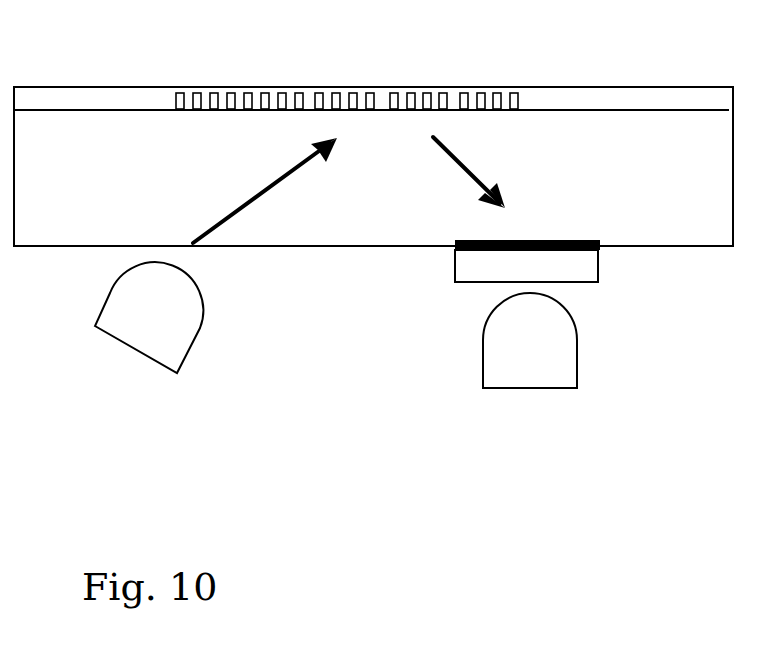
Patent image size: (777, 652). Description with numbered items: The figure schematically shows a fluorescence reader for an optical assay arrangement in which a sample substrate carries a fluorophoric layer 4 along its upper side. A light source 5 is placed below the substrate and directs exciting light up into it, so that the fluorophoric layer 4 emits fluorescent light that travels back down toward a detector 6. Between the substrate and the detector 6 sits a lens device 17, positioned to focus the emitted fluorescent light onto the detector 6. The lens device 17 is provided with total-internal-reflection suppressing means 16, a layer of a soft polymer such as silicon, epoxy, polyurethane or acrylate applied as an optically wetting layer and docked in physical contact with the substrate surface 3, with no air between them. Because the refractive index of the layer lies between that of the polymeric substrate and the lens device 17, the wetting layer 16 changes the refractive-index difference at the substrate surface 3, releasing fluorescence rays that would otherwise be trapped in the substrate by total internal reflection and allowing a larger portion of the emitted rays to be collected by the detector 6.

The substrate surface 3 is at (658, 246).
The fluorophoric layer 4 is at (272, 87).
The light source 5 is at (97, 321).
The detector 6 is at (547, 389).
The total-internal-reflection suppressing means 16 is at (500, 242).
The lens device 17 is at (448, 268).